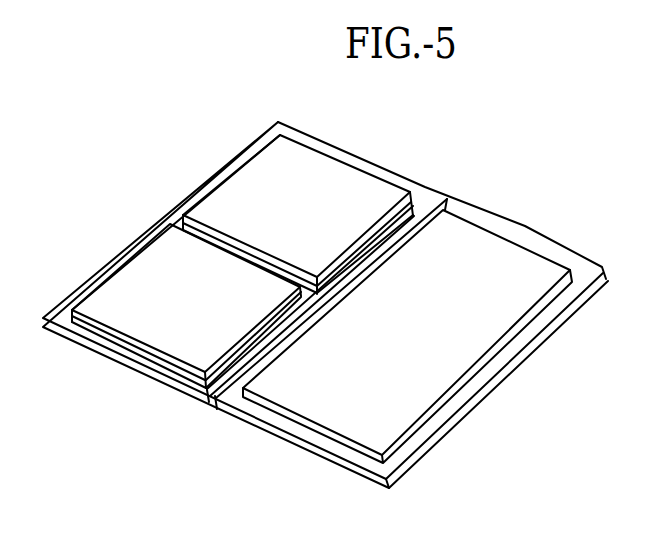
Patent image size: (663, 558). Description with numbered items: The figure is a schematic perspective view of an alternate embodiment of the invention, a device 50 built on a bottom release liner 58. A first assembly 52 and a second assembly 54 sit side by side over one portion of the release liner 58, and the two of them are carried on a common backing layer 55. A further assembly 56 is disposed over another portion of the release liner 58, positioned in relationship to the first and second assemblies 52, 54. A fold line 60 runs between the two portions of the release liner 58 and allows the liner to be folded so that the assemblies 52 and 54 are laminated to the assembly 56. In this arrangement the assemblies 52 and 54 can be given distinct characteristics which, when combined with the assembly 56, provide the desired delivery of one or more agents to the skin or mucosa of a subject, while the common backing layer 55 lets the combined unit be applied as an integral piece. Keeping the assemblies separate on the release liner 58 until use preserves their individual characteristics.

The device 50 is at (104, 177).
The first assembly 52 is at (257, 190).
The second assembly 54 is at (130, 292).
The further assembly 56 is at (498, 253).
The common backing layer 55 is at (313, 293).
The bottom release liner 58 is at (175, 390).
The fold line 60 is at (227, 387).